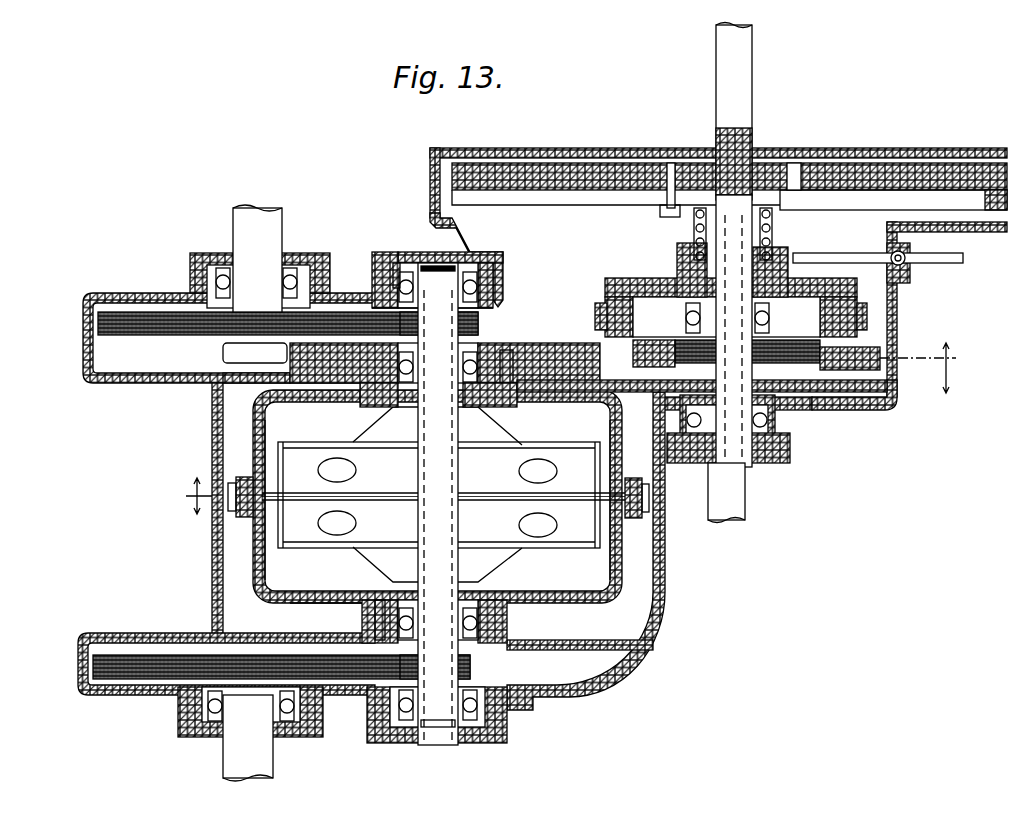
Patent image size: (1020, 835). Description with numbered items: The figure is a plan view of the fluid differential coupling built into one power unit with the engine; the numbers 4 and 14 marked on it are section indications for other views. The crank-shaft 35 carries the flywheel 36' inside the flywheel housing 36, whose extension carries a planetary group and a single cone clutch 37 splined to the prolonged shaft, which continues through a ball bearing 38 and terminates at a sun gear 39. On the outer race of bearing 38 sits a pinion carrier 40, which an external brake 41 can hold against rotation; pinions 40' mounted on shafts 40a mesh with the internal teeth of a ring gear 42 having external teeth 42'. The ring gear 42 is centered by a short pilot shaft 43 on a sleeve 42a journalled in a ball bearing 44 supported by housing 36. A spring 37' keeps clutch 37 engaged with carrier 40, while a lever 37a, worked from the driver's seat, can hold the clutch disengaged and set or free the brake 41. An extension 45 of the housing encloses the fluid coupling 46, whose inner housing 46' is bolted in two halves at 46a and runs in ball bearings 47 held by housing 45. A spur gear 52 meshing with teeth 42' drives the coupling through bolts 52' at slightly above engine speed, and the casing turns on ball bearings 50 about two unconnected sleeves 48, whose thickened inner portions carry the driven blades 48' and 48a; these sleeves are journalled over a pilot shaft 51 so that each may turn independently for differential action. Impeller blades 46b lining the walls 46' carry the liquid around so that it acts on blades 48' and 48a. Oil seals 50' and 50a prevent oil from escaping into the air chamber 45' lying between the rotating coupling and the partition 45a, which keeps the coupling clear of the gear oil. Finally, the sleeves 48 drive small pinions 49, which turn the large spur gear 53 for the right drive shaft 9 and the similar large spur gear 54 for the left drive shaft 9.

The section line 4 is at (193, 496).
The drive shaft 9 is at (283, 222).
The section line 14 is at (929, 368).
The crank-shaft 35 is at (718, 75).
The flywheel housing 36 is at (702, 279).
The flywheel 36' is at (729, 171).
The clutch 37 is at (783, 270).
The spring 37' is at (711, 234).
The lever 37a is at (860, 248).
The ball bearing 38 is at (700, 300).
The sun gear 39 is at (790, 395).
The pinion carrier 40 is at (589, 315).
The pinions 40' is at (757, 384).
The shafts 40a is at (822, 362).
The brake 41 is at (867, 315).
The ring gear 42 is at (711, 379).
The external teeth 42' is at (870, 395).
The sleeve 42a is at (785, 455).
The pilot shaft 43 is at (745, 478).
The ball bearing 44 is at (698, 448).
The housing 45 is at (350, 504).
The air chamber 45' is at (600, 551).
The partition 45a is at (250, 385).
The fluid differential coupling 46 is at (438, 507).
The inner housing 46' is at (376, 615).
The bolts 46a is at (245, 518).
The impeller blades 46b is at (262, 425).
The ball bearings 47 is at (398, 265).
The sleeves 48 is at (439, 509).
The driven blades 48' is at (437, 429).
The driven blades 48a is at (380, 548).
The pinions 49 is at (478, 330).
The ball bearings 50 is at (418, 513).
The oil seal 50' is at (509, 401).
The oil seal 50a is at (490, 622).
The pilot shaft 51 is at (470, 352).
The spur gear 52 is at (384, 383).
The bolts 52' is at (539, 359).
The large spur gear 53 is at (155, 320).
The large spur gear 54 is at (150, 680).